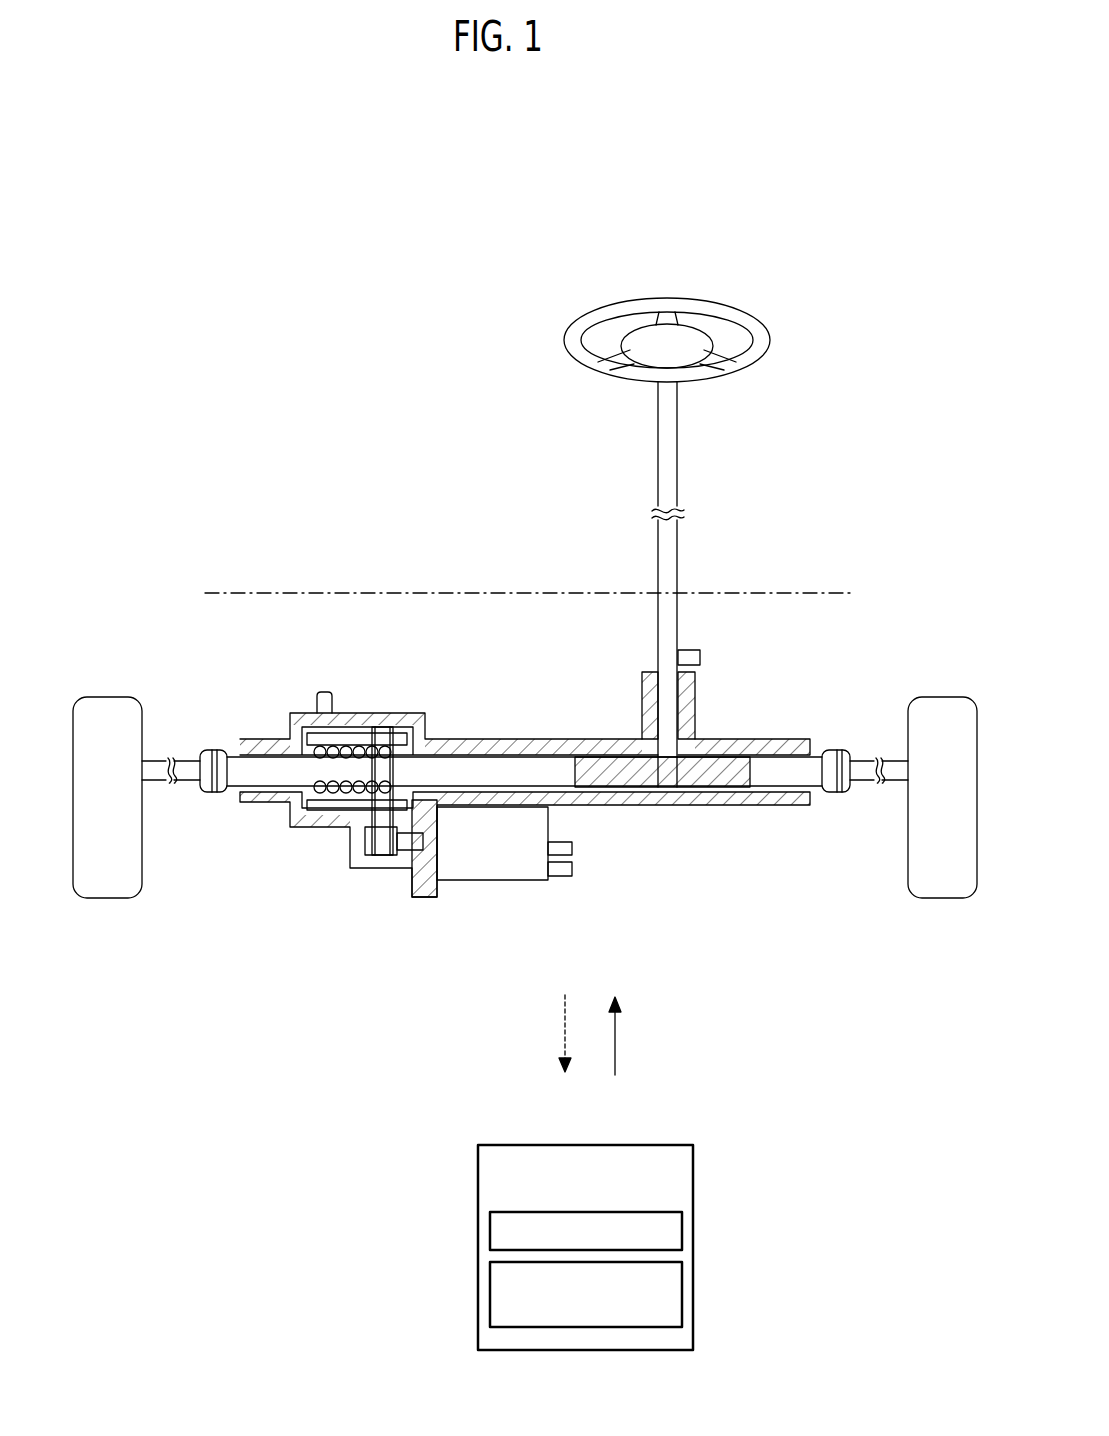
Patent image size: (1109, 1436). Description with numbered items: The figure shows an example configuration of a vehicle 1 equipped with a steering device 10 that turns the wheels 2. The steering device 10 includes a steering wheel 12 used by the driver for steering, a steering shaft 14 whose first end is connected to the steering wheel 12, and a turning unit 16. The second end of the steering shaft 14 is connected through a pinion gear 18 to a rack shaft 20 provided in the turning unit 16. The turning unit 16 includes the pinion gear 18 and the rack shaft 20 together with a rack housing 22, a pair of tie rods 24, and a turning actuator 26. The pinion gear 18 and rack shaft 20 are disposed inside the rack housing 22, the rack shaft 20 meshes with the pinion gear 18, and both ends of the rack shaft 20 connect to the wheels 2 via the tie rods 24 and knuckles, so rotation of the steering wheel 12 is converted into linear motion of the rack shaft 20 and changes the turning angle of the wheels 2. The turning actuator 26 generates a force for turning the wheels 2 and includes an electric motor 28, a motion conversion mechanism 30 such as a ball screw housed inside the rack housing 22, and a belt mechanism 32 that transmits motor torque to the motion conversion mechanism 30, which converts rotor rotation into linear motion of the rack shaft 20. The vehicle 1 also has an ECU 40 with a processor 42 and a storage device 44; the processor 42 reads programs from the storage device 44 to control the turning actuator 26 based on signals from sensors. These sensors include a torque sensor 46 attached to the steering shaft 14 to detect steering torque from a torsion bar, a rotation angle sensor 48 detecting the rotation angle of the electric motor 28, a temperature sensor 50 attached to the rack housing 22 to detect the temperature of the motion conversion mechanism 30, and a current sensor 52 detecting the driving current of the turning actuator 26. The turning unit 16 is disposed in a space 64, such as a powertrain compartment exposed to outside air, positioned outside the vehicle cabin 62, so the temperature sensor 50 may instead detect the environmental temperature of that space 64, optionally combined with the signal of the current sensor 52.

The vehicle 1 is at (850, 147).
The wheels 2 is at (103, 698).
The steering device 10 is at (412, 467).
The steering wheel 12 is at (740, 310).
The steering shaft 14 is at (678, 463).
The turning unit 16 is at (647, 820).
The pinion gear 18 is at (695, 738).
The rack shaft 20 is at (490, 767).
The rack housing 22 is at (772, 738).
The tie rods 24 is at (187, 758).
The turning actuator 26 is at (395, 898).
The electric motor 28 is at (482, 880).
The motion conversion mechanism 30 is at (333, 743).
The belt mechanism 32 is at (373, 770).
The electronic control unit (ECU) 40 is at (643, 1145).
The processor 42 is at (488, 1237).
The storage device 44 is at (488, 1293).
The torque sensor 46 is at (692, 652).
The rotation angle sensor 48 is at (572, 848).
The temperature sensor 50 is at (322, 692).
The current sensor 52 is at (572, 870).
The vehicle cabin 62 is at (471, 573).
The space 64 is at (471, 652).